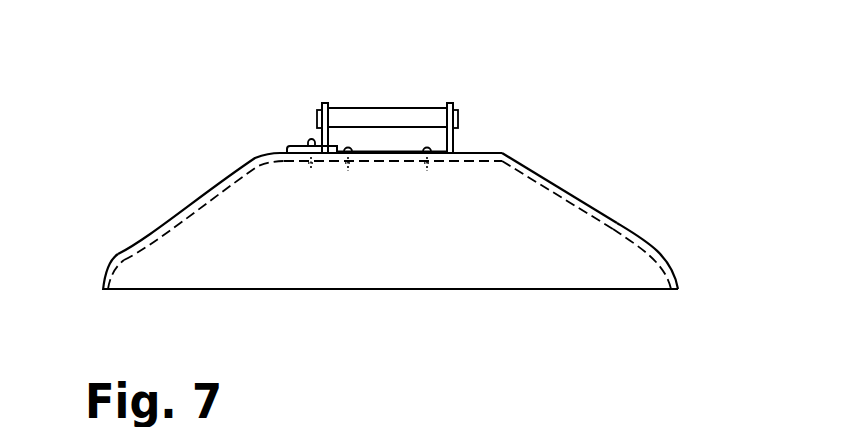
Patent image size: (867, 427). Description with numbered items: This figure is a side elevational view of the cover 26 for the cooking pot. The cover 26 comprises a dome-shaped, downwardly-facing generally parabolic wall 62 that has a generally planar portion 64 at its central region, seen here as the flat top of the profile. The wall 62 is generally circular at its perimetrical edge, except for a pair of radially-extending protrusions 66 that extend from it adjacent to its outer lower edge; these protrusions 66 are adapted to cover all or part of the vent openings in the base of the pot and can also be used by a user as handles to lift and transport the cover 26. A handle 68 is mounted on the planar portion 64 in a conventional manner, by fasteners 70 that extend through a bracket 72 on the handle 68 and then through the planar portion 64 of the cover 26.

The cover 26 is at (633, 210).
The parabolic wall 62 is at (208, 187).
The planar portion 64 is at (512, 155).
The protrusions 66 is at (107, 270).
The handle 68 is at (384, 108).
The fasteners 70 is at (348, 166).
The bracket 72 is at (453, 140).